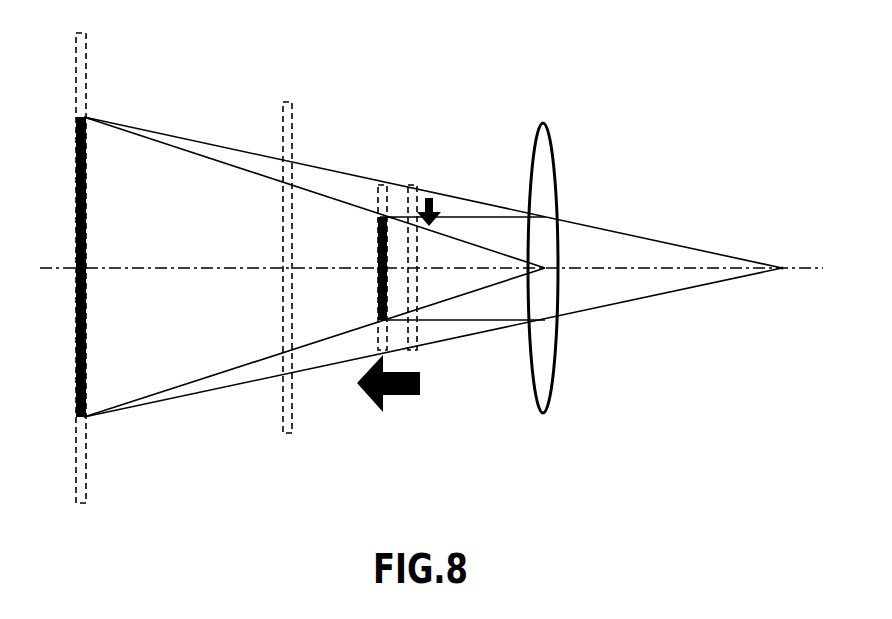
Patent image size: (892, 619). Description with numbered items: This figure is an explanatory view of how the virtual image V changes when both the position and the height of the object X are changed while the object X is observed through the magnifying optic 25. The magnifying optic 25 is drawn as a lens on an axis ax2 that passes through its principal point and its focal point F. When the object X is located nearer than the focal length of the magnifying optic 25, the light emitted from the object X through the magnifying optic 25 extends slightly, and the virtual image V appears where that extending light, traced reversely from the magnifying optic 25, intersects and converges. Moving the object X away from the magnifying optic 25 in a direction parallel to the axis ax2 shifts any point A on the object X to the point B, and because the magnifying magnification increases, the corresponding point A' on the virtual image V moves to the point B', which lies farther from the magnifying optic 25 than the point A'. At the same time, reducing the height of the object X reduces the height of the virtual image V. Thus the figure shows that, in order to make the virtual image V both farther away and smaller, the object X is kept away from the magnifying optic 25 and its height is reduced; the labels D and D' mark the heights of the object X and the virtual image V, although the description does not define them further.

The magnifying optic 25 is at (553, 147).
The virtual image V is at (76, 352).
The object X is at (378, 296).
The focal point F is at (788, 256).
The axis ax2 is at (52, 267).
The object height D is at (376, 225).
The image height D' is at (72, 125).
The point A is at (403, 263).
The point A' is at (277, 262).
The point B is at (373, 263).
The point B' is at (71, 263).